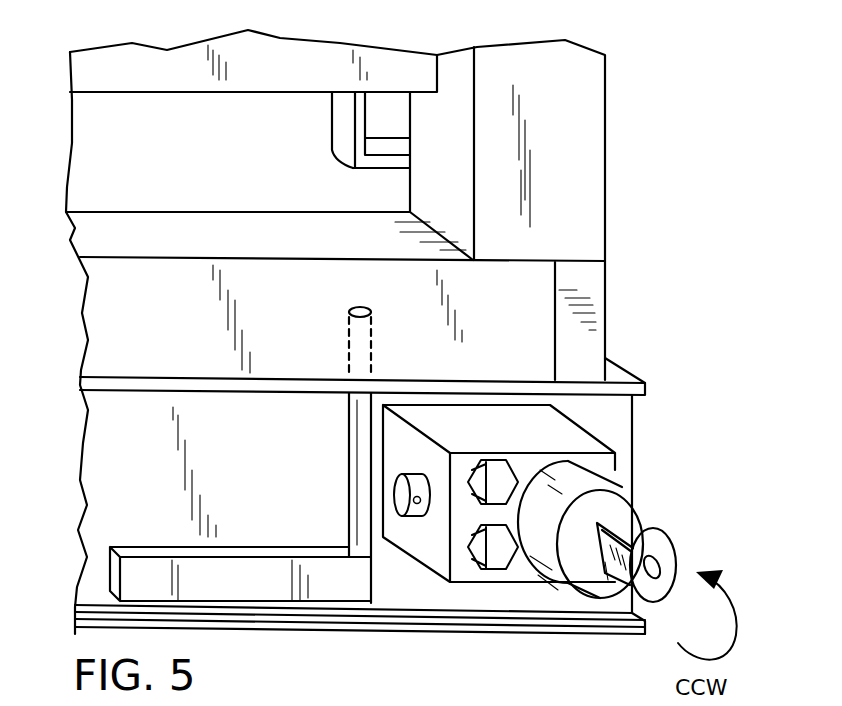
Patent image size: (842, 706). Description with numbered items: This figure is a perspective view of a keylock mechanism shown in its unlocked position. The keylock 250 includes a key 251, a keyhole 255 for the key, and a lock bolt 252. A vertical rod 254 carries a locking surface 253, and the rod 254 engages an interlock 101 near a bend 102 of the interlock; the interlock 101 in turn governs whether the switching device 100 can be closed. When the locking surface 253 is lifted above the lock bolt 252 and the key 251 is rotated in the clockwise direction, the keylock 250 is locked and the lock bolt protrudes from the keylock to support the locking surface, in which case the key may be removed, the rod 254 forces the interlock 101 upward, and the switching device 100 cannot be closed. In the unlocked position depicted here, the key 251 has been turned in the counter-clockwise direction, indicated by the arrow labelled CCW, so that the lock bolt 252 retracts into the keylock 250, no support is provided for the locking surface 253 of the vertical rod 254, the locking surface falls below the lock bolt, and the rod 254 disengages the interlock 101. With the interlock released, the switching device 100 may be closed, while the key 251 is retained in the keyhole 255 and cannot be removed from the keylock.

The switching device 100 is at (338, 63).
The interlock 101 is at (335, 112).
The bend 102 is at (353, 168).
The keylock 250 is at (592, 480).
The key 251 is at (660, 527).
The lock bolt 252 is at (413, 478).
The locking surface 253 is at (282, 605).
The vertical rod 254 is at (357, 500).
The keyhole 255 is at (572, 565).